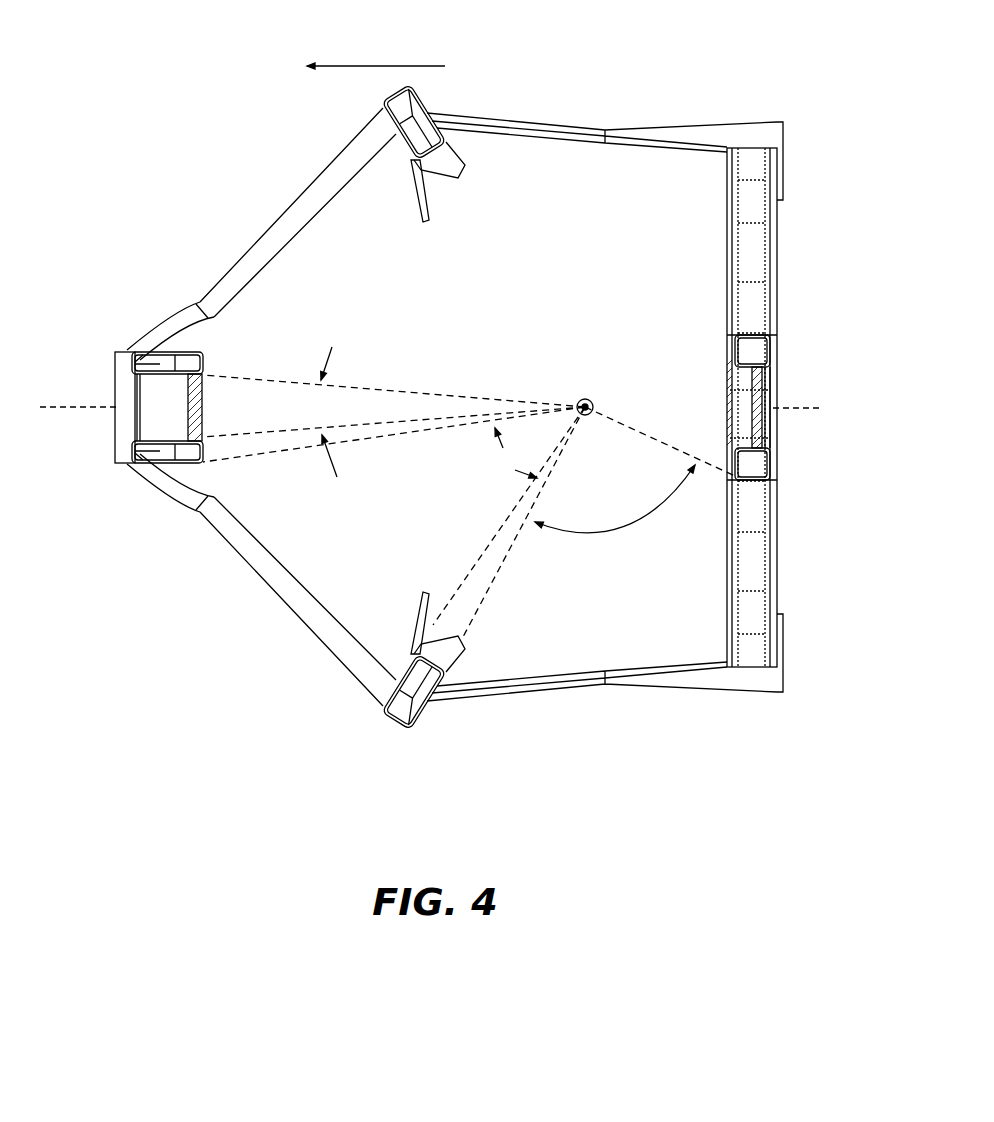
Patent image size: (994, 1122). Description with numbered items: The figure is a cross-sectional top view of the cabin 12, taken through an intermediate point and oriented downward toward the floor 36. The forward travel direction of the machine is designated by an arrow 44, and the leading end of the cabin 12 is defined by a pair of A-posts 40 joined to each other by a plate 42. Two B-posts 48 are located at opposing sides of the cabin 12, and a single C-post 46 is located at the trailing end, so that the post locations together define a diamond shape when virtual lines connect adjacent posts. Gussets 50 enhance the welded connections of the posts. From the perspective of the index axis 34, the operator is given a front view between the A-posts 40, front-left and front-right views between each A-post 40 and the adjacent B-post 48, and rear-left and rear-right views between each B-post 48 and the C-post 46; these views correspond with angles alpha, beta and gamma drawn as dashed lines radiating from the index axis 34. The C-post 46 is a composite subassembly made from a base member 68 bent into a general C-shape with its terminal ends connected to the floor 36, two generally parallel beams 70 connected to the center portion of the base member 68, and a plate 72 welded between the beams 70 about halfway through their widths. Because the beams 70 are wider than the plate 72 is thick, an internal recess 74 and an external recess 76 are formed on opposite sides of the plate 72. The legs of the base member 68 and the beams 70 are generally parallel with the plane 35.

The cabin 12 is at (140, 114).
The index axis 34 is at (585, 400).
The plane 35 is at (80, 407).
The floor 36 is at (572, 645).
The A-posts 40 is at (173, 342).
The plate 42 is at (122, 443).
The arrow 44 is at (393, 66).
The C-post 46 is at (697, 408).
The B-posts 48 is at (425, 104).
The gussets 50 is at (413, 200).
The base member 68 is at (747, 243).
The beams 70 is at (753, 348).
The plate 72 is at (758, 420).
The internal recess 74 is at (747, 385).
The external recess 76 is at (765, 383).